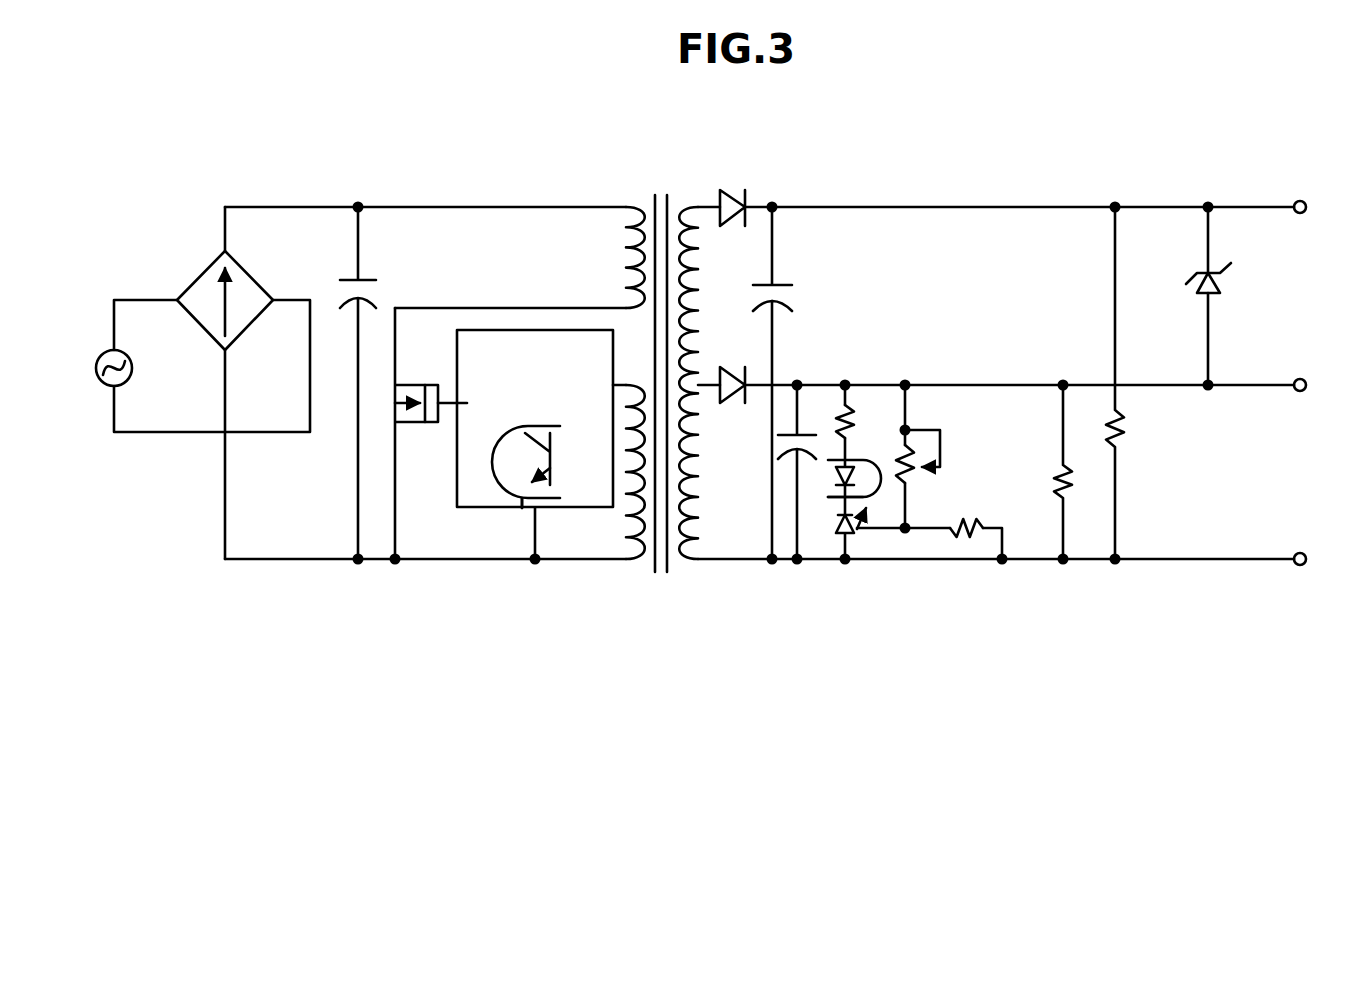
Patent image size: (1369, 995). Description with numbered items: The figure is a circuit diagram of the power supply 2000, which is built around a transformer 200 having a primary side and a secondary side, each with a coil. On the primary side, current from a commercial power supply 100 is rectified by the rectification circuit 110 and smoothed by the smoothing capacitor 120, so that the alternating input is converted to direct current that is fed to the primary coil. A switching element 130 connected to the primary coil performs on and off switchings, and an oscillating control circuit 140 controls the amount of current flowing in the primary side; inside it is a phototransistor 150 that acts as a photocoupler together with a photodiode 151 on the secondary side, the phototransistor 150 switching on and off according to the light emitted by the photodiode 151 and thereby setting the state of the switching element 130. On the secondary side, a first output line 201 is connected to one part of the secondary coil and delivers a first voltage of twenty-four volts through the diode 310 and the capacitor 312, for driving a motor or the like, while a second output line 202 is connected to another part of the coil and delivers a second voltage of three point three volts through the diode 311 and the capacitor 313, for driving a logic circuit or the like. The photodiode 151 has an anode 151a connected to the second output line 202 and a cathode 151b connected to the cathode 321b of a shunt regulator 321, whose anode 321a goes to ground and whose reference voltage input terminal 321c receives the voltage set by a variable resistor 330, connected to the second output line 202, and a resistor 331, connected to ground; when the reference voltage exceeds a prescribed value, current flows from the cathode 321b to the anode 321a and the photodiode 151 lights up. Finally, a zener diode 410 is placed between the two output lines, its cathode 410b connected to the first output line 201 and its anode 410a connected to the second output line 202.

The power supply 2000 is at (254, 127).
The commercial power supply 100 is at (132, 377).
The rectification circuit 110 is at (253, 268).
The smoothing capacitor 120 is at (376, 282).
The switching element 130 is at (412, 424).
The oscillating control circuit 140 is at (457, 482).
The phototransistor 150 is at (522, 508).
The transformer 200 is at (668, 186).
The first output line 201 is at (1255, 205).
The second output line 202 is at (1255, 387).
The diode 310 is at (745, 200).
The diode 311 is at (745, 378).
The capacitor 312 is at (792, 283).
The capacitor 313 is at (780, 435).
The photodiode 151 is at (876, 530).
The anode 151a is at (856, 465).
The cathode 151b is at (832, 487).
The shunt regulator 321 is at (835, 541).
The anode 321a is at (855, 533).
The cathode 321b is at (838, 511).
The reference voltage input terminal 321c is at (860, 533).
The variable resistor 330 is at (956, 441).
The resistor 331 is at (967, 517).
The zener diode 410 is at (1199, 303).
The anode 410a is at (1220, 293).
The cathode 410b is at (1232, 265).